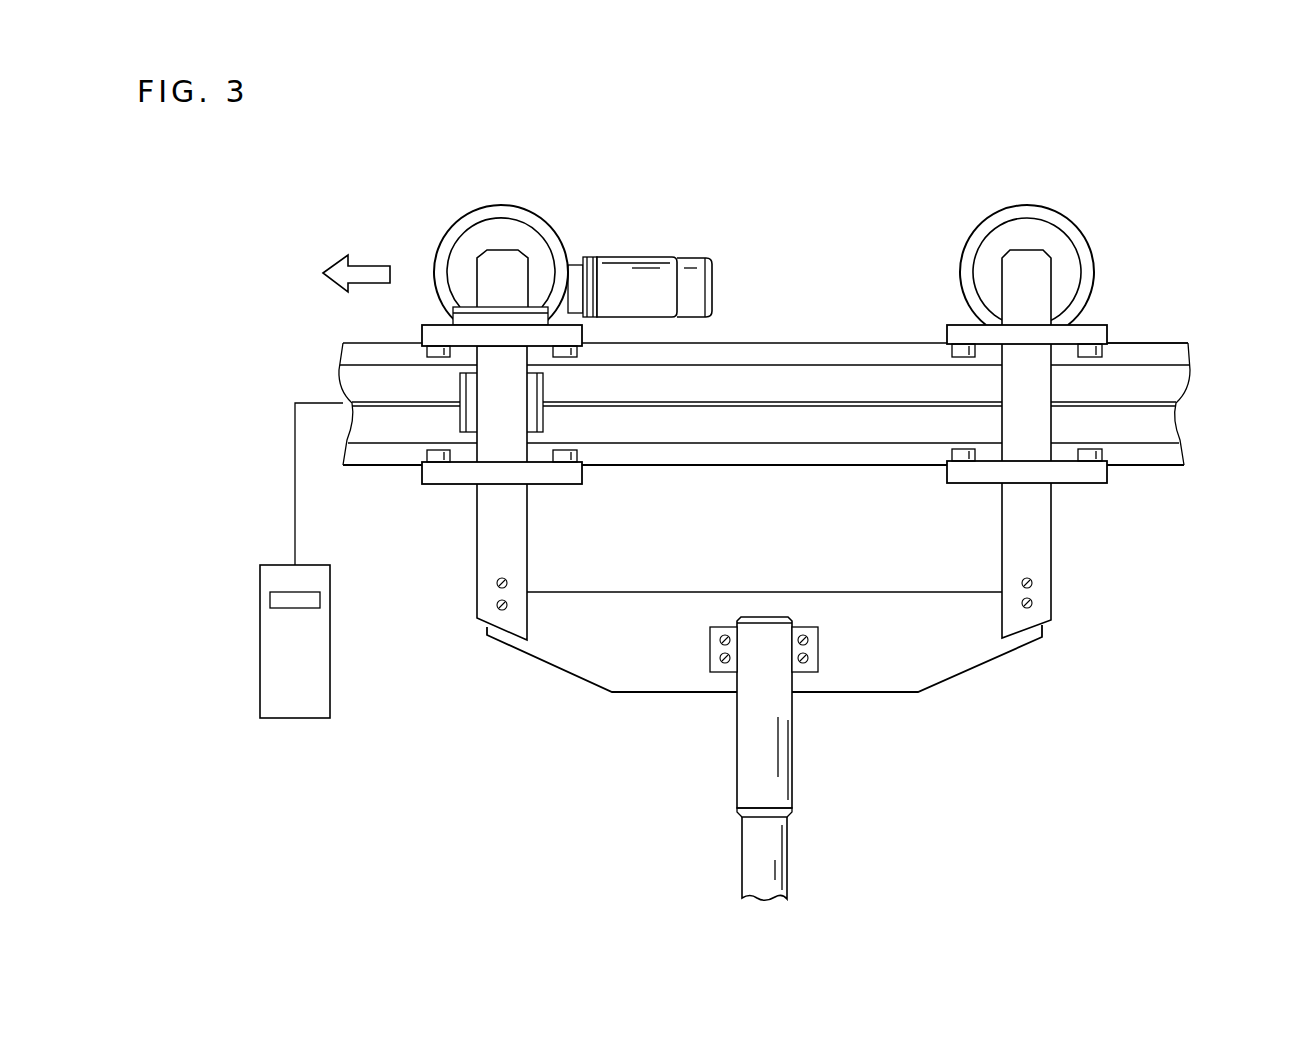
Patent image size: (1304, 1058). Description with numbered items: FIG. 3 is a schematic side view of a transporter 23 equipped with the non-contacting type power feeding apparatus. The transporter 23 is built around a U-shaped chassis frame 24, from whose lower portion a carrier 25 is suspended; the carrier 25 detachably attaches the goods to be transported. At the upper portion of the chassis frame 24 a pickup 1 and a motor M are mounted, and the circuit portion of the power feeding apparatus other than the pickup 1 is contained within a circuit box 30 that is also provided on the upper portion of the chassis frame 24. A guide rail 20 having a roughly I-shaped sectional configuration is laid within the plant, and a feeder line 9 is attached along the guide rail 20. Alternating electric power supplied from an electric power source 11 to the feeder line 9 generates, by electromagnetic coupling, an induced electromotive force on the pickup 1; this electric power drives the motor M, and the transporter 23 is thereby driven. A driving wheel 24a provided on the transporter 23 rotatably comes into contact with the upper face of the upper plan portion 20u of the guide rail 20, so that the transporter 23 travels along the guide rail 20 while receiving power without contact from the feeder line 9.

The pickup 1 is at (460, 385).
The feeder line 9 is at (1178, 408).
The electric power source 11 is at (295, 718).
The guide rail 20 is at (831, 343).
The upper plan portion 20u is at (1175, 350).
The transporter 23 is at (899, 216).
The chassis frame 24 is at (1028, 622).
The driving wheel 24a is at (527, 207).
The carrier 25 is at (737, 750).
The circuit box 30 is at (497, 306).
The motor M is at (634, 257).